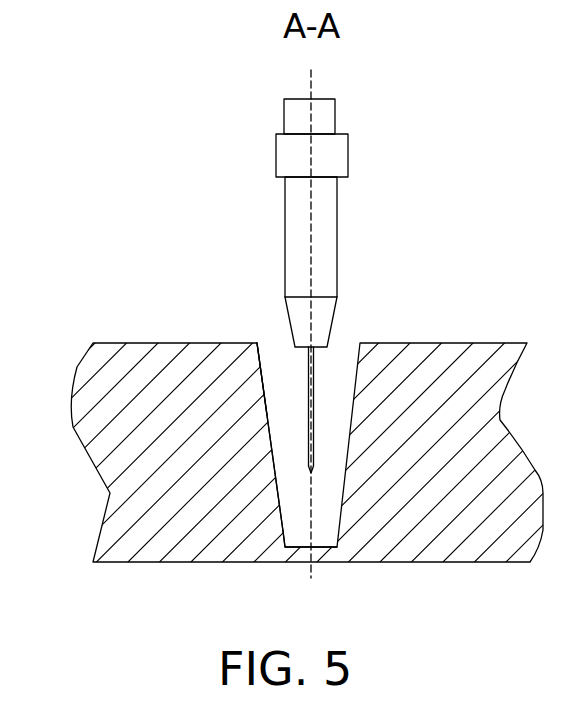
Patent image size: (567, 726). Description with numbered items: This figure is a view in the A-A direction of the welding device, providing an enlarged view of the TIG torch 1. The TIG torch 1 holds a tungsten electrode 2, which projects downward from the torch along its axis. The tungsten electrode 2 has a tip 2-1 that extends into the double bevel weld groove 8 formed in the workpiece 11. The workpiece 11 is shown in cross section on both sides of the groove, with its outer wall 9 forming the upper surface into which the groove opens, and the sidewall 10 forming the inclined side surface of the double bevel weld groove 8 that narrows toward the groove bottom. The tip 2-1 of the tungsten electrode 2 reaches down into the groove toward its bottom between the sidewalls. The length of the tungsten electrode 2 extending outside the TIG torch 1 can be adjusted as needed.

The TIG torch 1 is at (320, 273).
The tungsten electrode 2 is at (313, 390).
The tip of tungsten electrode 2-1 is at (311, 473).
The double bevel weld groove 8 is at (300, 547).
The outer wall of workpiece 9 is at (240, 405).
The sidewall 10 is at (272, 447).
The workpiece 11 is at (175, 407).